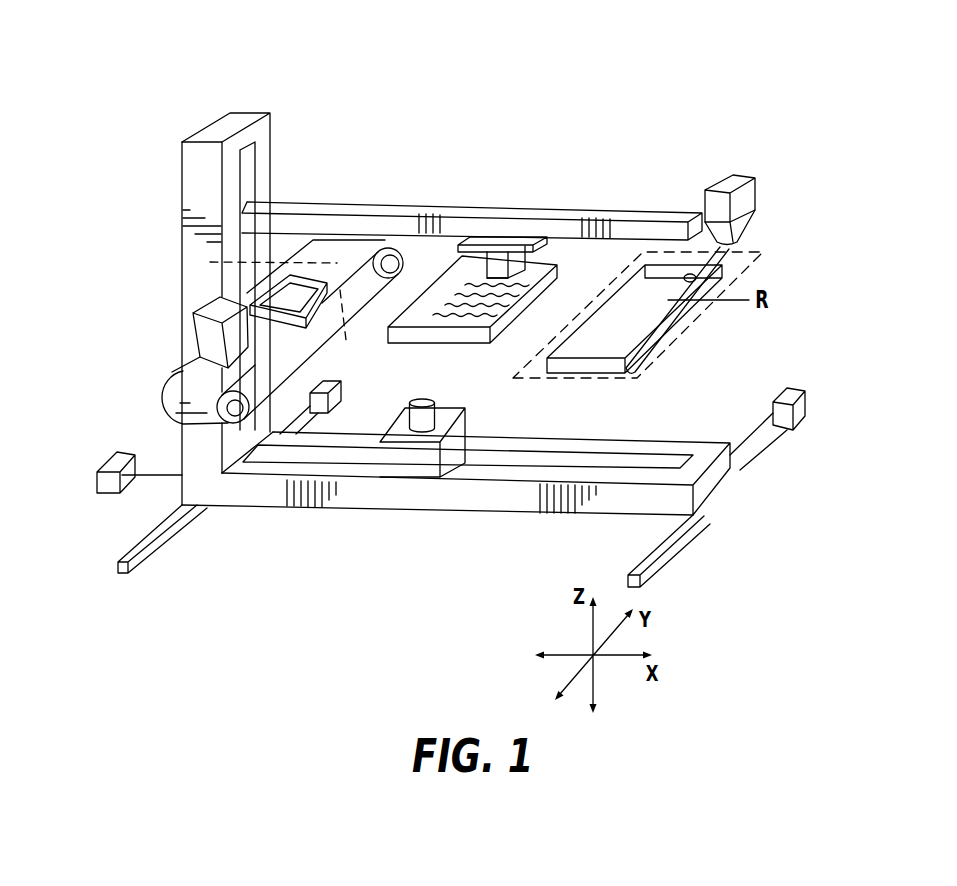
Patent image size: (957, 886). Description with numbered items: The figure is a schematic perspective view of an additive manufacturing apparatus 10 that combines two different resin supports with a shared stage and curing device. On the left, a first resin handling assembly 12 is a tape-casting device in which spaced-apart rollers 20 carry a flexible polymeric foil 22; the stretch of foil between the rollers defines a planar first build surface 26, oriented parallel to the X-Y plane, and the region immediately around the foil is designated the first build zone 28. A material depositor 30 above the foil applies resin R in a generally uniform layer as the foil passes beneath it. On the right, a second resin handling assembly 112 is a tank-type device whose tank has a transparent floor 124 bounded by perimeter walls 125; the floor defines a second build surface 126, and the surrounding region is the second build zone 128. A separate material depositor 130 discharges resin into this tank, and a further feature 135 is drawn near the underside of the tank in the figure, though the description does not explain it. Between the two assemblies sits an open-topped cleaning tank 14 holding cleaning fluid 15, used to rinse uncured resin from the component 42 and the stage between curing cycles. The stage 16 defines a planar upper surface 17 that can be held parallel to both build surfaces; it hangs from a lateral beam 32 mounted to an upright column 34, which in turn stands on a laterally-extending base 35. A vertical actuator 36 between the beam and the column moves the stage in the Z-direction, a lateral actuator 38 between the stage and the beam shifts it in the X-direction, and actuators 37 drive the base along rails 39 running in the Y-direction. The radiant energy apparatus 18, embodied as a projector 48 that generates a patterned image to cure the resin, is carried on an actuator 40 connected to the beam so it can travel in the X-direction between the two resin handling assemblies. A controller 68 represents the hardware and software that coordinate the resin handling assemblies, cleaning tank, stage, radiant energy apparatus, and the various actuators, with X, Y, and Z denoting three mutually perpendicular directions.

The apparatus 10 is at (538, 62).
The first resin handling assembly 12 is at (148, 377).
The cleaning tank 14 is at (461, 340).
The cleaning fluid 15 is at (430, 323).
The stage 16 is at (521, 262).
The planar upper surface 17 is at (464, 260).
The radiant energy apparatus 18 is at (461, 396).
The rollers 20 is at (391, 263).
The foil 22 is at (362, 240).
The first build surface 26 is at (330, 247).
The first build zone 28 is at (518, 372).
The material depositor 30 is at (208, 331).
The lateral beam 32 is at (627, 217).
The upright column 34 is at (213, 133).
The base 35 is at (509, 498).
The vertical actuator 36 is at (249, 161).
The actuators 37 is at (340, 397).
The lateral actuator 38 is at (612, 250).
The rails 39 is at (163, 541).
The actuator 40 is at (650, 462).
The component 42 is at (496, 262).
The projector 48 is at (410, 458).
The controller 68 is at (110, 488).
The second resin handling assembly 112 is at (789, 246).
The floor 124 is at (630, 336).
The perimeter walls 125 is at (646, 348).
The second build surface 126 is at (749, 309).
The second build zone 128 is at (569, 393).
The material depositor 130 is at (745, 193).
The tray bottom 135 is at (614, 378).